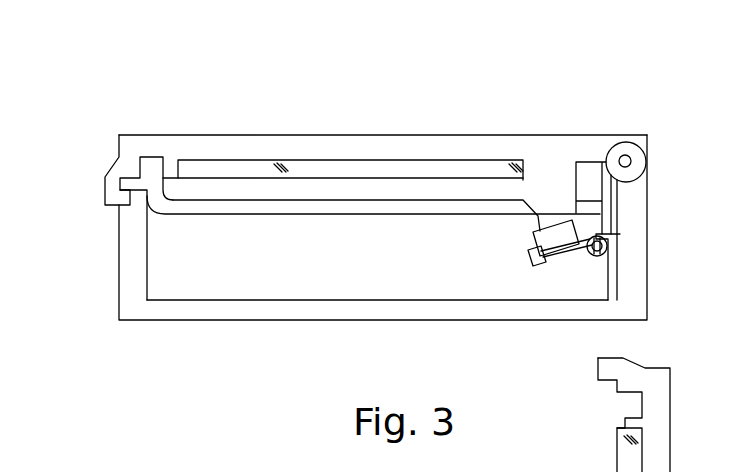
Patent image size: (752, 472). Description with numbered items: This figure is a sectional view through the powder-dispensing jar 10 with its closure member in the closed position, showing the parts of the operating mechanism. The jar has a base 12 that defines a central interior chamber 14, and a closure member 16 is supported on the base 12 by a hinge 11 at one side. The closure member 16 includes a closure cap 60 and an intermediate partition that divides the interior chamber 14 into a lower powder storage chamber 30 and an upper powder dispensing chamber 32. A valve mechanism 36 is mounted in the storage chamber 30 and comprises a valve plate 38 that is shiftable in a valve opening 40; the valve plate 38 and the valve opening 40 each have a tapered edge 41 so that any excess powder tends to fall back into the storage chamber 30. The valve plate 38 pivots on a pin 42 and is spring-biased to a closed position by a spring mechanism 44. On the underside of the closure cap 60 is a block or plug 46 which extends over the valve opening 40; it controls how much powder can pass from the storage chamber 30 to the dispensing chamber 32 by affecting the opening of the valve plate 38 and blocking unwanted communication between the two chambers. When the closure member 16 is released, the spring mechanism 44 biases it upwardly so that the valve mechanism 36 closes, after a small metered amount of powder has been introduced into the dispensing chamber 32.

The powder-dispensing jar 10 is at (143, 108).
The hinge 11 is at (625, 161).
The base 12 is at (118, 261).
The central interior chamber 14 is at (273, 277).
The closure member 16 is at (524, 132).
The powder storage chamber 30 is at (497, 287).
The powder dispensing chamber 32 is at (298, 188).
The valve mechanism 36 is at (546, 264).
The valve plate 38 is at (535, 240).
The valve opening 40 is at (560, 218).
The tapered edge 41 is at (525, 254).
The pin 42 is at (610, 247).
The spring mechanism 44 is at (560, 258).
The plug 46 is at (549, 187).
The closure cap 60 is at (400, 152).